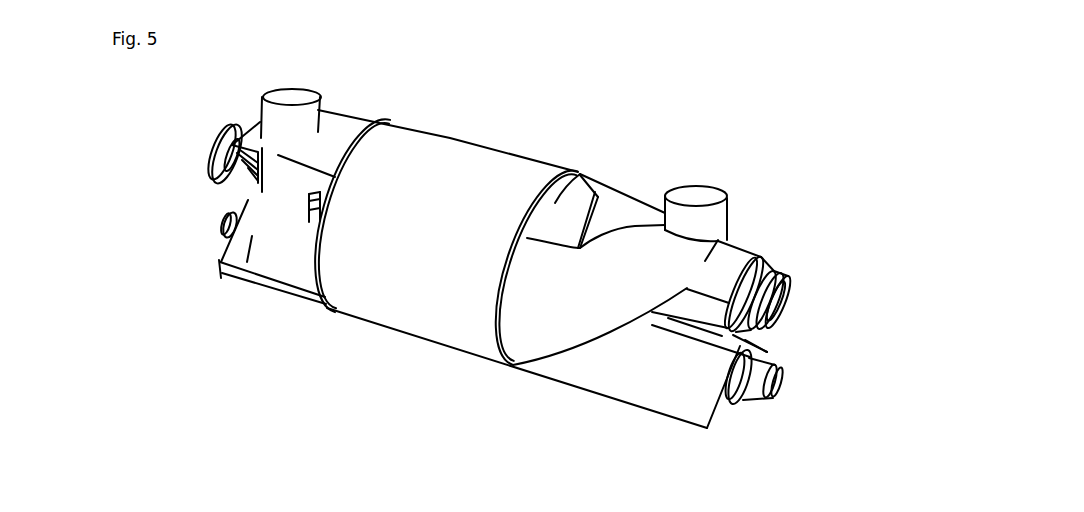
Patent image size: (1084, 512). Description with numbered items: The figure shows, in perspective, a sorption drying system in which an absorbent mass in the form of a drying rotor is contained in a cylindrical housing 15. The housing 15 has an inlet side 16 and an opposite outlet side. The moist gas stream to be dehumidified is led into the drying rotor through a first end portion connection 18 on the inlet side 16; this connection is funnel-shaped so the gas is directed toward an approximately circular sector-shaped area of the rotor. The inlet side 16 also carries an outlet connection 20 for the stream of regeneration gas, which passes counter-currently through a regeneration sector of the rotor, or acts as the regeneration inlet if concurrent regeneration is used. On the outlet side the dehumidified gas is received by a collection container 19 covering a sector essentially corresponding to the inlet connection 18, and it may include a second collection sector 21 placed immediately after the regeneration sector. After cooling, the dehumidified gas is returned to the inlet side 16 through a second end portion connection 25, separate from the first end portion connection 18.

The cylindrical housing 15 is at (450, 182).
The inlet side 16 is at (580, 178).
The first end portion connection 18 is at (789, 296).
The collection container 19 is at (342, 116).
The outlet connection 20 is at (780, 380).
The second collection sector 21 is at (247, 265).
The second end portion connection 25 is at (597, 297).